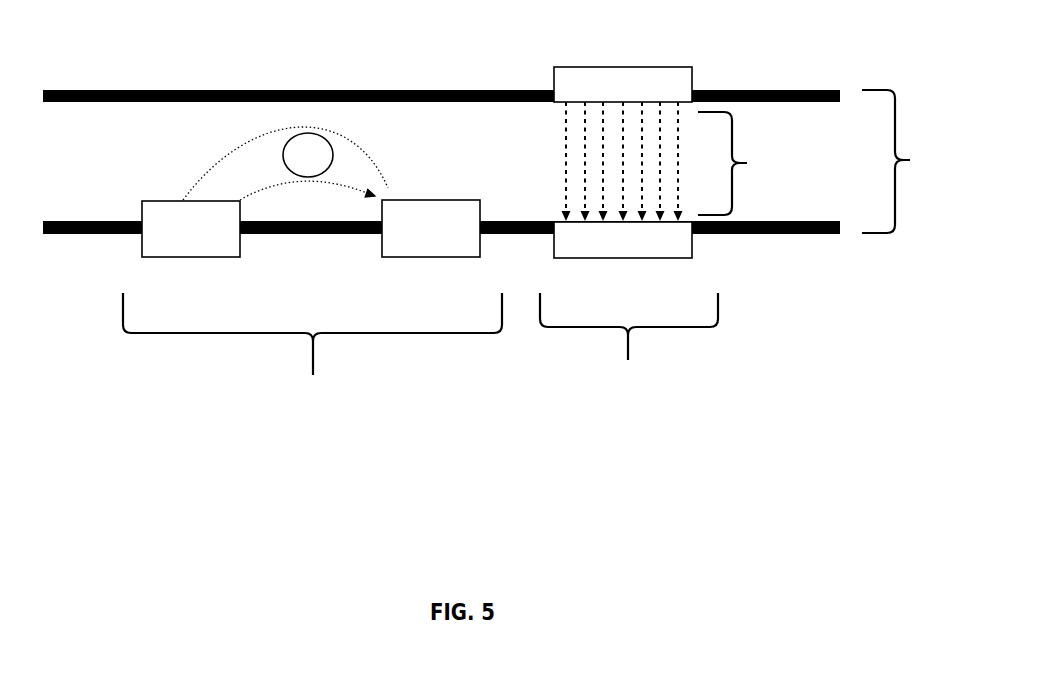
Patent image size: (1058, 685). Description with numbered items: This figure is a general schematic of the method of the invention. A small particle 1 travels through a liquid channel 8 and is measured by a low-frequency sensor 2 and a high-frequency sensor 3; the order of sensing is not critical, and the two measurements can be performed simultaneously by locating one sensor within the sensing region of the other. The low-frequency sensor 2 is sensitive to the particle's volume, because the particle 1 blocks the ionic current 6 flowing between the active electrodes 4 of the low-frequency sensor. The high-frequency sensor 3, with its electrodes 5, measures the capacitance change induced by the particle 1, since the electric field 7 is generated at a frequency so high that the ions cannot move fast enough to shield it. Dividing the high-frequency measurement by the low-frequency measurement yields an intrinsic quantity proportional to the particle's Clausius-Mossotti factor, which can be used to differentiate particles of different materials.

The particle 1 is at (283, 156).
The low-frequency sensor 2 is at (312, 353).
The high-frequency sensor 3 is at (629, 349).
The active electrodes for low-frequency sensor 4 is at (228, 257).
The electrodes for high-frequency sensor 5 is at (590, 67).
The ionic current 6 is at (338, 181).
The electric field 7 is at (750, 163).
The liquid channel 8 is at (912, 160).